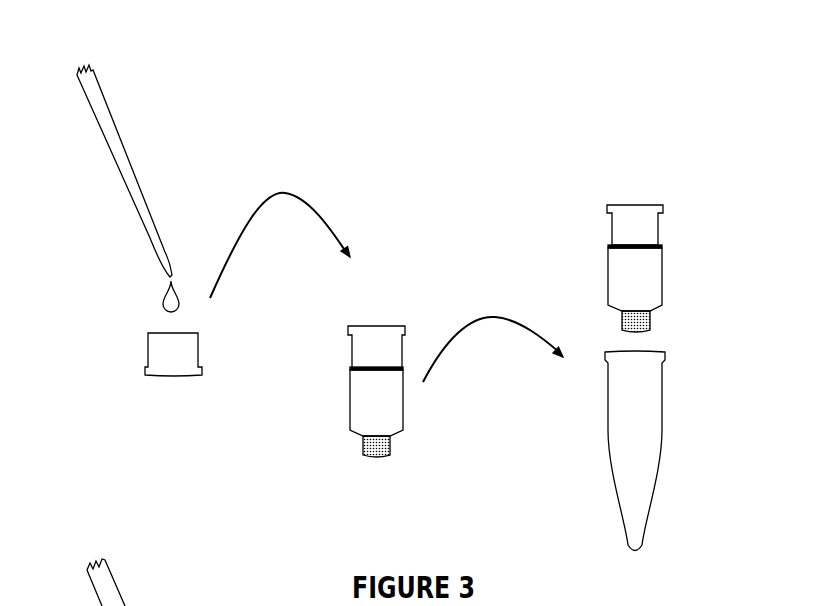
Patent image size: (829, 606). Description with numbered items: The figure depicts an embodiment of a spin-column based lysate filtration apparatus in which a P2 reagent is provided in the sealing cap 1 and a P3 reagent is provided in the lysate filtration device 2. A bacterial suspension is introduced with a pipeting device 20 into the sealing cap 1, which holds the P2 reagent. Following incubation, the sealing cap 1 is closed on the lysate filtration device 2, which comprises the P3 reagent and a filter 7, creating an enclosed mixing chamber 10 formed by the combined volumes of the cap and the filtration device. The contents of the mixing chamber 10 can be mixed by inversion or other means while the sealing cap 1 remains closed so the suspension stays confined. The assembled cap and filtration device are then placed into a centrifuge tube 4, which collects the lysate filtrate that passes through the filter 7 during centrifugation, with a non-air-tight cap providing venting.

The pipeting device 20 is at (121, 167).
The sealing cap 1 is at (144, 353).
The lysate filtration device 2 is at (348, 407).
The mixing chamber 10 is at (373, 384).
The filter 7 is at (365, 444).
The centrifuge tube 4 is at (662, 427).